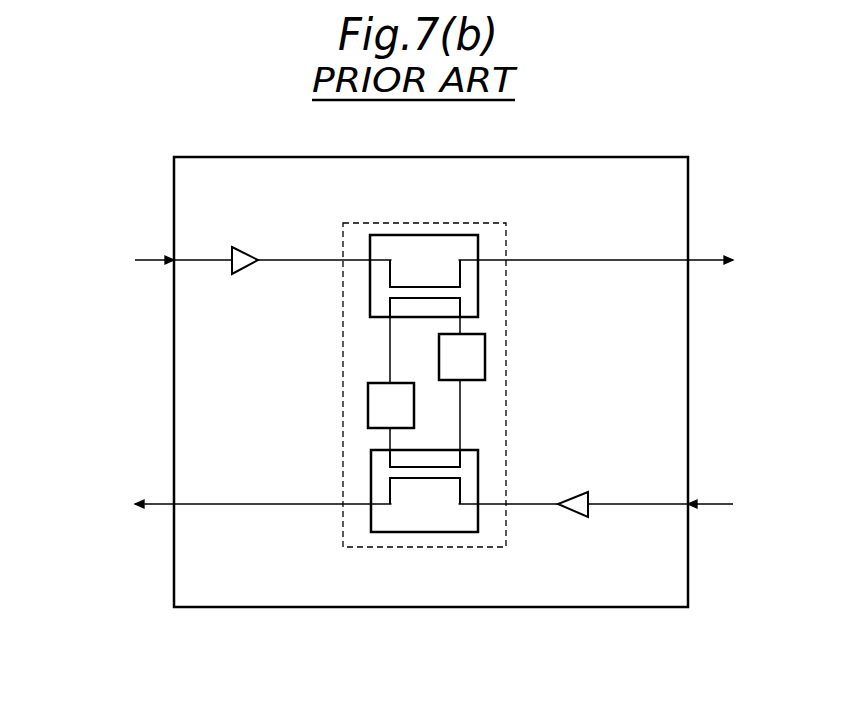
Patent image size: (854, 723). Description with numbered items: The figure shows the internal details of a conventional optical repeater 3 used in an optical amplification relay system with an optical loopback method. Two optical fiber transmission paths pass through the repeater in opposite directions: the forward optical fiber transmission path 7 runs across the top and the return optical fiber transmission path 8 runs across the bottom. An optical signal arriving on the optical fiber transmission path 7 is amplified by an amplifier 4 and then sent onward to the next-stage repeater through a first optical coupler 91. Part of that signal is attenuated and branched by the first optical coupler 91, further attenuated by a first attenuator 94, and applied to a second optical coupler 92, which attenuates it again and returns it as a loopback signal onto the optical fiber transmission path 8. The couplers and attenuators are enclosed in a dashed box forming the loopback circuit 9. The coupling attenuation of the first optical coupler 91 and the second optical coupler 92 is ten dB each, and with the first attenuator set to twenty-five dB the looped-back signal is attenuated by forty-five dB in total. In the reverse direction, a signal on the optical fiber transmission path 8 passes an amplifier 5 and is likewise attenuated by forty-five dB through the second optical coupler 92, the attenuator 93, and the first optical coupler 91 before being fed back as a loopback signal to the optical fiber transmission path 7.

The optical repeater 3 is at (425, 607).
The amplifier 4 is at (235, 246).
The amplifier 5 is at (572, 518).
The optical fiber transmission path 7 is at (710, 284).
The optical fiber transmission path 8 is at (713, 507).
The loopback circuit 9 is at (506, 298).
The first optical coupler 91 is at (478, 245).
The second optical coupler 92 is at (370, 515).
The attenuator 93 is at (368, 402).
The first attenuator 94 is at (485, 362).